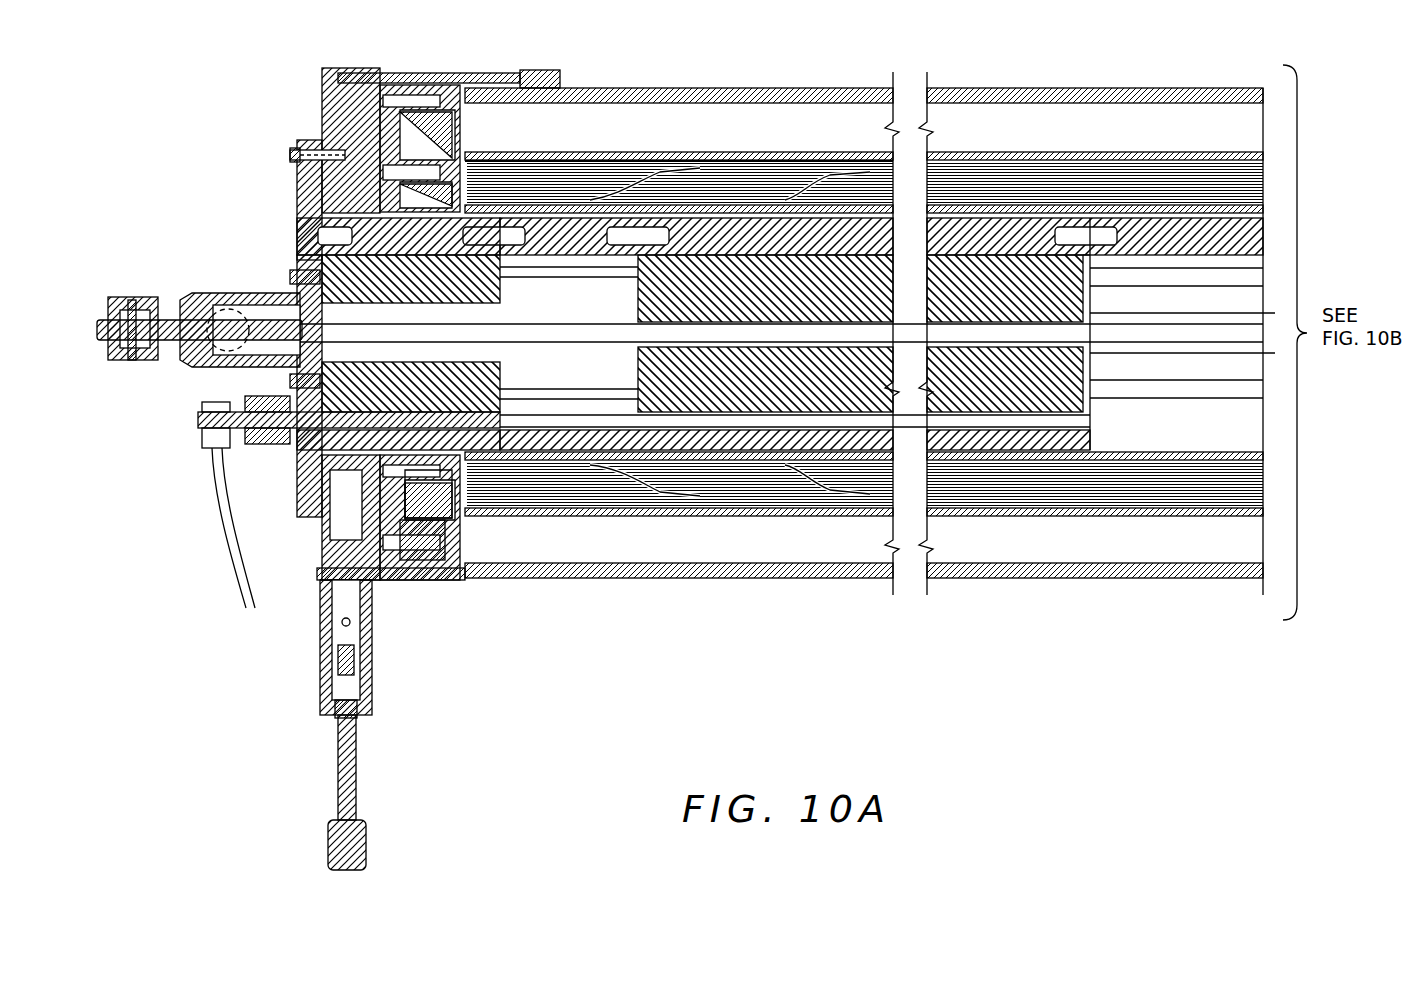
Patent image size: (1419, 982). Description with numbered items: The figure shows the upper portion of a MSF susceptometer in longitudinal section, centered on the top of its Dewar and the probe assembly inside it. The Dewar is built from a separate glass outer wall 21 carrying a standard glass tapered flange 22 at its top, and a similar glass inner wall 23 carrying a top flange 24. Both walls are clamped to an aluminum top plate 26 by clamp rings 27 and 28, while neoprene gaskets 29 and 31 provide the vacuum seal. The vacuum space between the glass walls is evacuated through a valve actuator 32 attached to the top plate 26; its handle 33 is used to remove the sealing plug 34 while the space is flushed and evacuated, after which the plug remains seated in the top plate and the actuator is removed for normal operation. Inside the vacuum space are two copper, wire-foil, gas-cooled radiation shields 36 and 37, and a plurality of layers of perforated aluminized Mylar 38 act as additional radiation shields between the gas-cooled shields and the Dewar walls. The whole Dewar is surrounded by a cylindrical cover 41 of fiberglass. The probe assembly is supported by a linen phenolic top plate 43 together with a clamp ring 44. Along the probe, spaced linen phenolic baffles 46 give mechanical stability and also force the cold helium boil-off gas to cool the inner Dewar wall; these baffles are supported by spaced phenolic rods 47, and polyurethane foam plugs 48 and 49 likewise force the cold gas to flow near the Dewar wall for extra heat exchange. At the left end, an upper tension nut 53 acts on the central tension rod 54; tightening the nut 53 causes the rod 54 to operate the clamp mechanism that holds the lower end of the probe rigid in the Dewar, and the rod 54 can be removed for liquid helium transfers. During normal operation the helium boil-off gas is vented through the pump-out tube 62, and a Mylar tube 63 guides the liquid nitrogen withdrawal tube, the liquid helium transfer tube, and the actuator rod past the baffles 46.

The glass outer wall 21 is at (708, 500).
The glass tapered flange 22 is at (412, 528).
The glass inner wall 23 is at (625, 462).
The top flange 24 is at (428, 515).
The aluminum top plate 26 is at (332, 100).
The clamp ring 27 is at (390, 125).
The clamp ring 28 is at (445, 185).
The neoprene gasket 29 is at (300, 180).
The neoprene gasket 31 is at (326, 88).
The valve actuator 32 is at (322, 672).
The handle 33 is at (338, 808).
The sealing plug 34 is at (352, 665).
The gas-cooled radiation shield 36 is at (993, 488).
The gas-cooled radiation shield 37 is at (1062, 485).
The perforated aluminized Mylar layers 38 is at (760, 492).
The cylindrical cover 41 is at (1195, 572).
The linen phenolic top plate 43 is at (305, 215).
The clamp ring 44 is at (300, 150).
The linen phenolic baffles 46 is at (660, 445).
The phenolic rods 47 is at (720, 232).
The polyurethane foam plug 48 is at (682, 265).
The polyurethane foam plug 49 is at (338, 265).
The upper tension nut 53 is at (112, 300).
The central tension rod 54 is at (186, 305).
The pump-out tube 62 is at (235, 318).
The Mylar tube 63 is at (1207, 320).